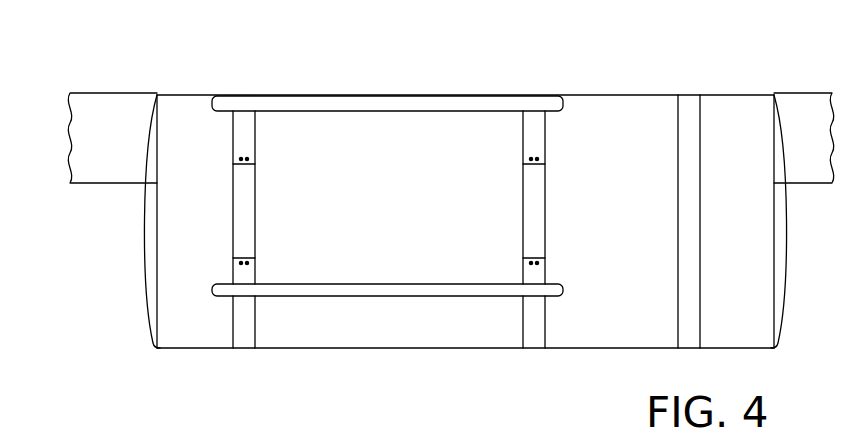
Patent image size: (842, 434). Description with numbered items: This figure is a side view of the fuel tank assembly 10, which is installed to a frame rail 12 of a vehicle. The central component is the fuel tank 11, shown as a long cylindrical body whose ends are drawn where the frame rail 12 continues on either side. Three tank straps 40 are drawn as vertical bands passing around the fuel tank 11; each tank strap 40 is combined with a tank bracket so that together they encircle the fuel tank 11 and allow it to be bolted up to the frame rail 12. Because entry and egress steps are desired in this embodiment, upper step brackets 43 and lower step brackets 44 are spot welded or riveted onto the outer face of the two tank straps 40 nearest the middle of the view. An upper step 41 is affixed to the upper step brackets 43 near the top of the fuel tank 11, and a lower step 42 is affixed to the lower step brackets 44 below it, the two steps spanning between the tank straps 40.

The fuel tank assembly 10 is at (480, 406).
The fuel tank 11 is at (180, 229).
The frame rail 12 is at (127, 112).
The tank strap 40 is at (247, 230).
The upper step 41 is at (330, 101).
The lower step 42 is at (402, 298).
The upper step bracket 43 is at (248, 135).
The lower step bracket 44 is at (249, 279).